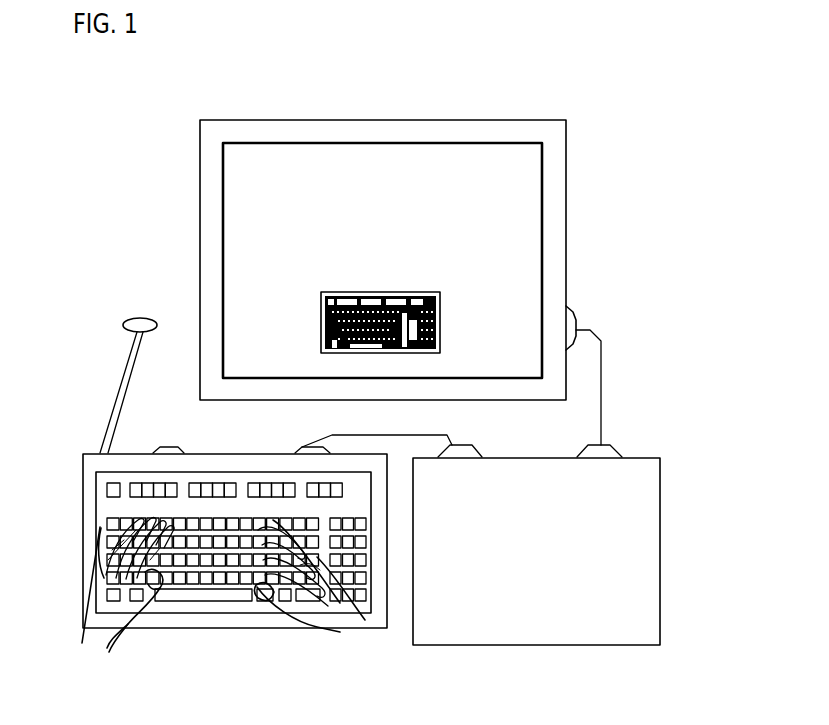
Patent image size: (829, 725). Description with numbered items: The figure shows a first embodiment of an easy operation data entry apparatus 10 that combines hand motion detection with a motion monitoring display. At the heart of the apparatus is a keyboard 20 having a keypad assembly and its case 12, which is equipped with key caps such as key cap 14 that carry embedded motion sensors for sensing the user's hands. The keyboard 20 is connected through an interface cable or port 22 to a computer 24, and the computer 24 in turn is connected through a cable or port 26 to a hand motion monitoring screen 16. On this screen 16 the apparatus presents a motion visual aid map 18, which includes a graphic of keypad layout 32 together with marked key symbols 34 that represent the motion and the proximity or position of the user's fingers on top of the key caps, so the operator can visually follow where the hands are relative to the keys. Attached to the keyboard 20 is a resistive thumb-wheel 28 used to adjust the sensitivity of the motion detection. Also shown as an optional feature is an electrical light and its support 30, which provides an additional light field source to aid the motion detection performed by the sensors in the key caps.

The easy operation data entry apparatus 10 is at (124, 168).
The case 12 is at (202, 541).
The key cap 14 is at (128, 522).
The hand motion monitoring screen 16 is at (248, 188).
The motion visual aid map 18 is at (381, 275).
The keyboard 20 is at (85, 533).
The interface cable or port 22 is at (298, 449).
The computer 24 is at (640, 460).
The cable or port 26 is at (601, 412).
The resistive thumb-wheel 28 is at (170, 447).
The electrical light and its support 30 is at (140, 319).
The graphic of keypad layout 32 is at (378, 312).
The marked key symbols 34 is at (422, 312).